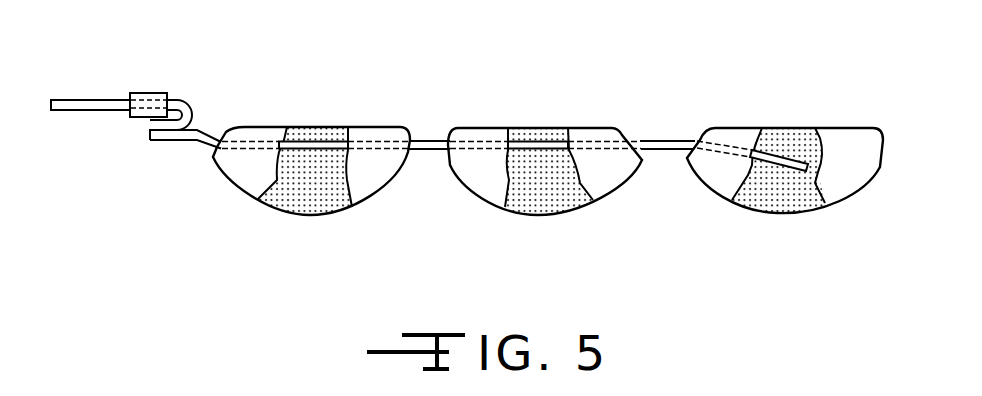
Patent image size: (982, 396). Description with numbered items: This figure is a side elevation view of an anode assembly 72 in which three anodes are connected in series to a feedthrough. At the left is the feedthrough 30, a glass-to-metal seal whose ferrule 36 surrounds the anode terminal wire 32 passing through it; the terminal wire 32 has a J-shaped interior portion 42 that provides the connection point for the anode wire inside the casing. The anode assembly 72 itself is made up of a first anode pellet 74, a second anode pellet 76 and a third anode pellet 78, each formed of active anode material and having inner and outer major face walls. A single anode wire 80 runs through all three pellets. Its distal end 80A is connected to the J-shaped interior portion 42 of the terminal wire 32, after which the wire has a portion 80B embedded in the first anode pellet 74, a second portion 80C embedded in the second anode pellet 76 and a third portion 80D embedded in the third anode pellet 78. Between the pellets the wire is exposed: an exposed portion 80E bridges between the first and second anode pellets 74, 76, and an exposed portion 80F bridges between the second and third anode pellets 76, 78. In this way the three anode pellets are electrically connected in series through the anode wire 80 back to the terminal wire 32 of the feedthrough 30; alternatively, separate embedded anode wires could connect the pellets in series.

The feedthrough 30 is at (145, 78).
The terminal wire 32 is at (78, 100).
The ferrule 36 is at (163, 95).
The J-shaped interior portion 42 is at (148, 125).
The anode assembly 72 is at (712, 88).
The first anode pellet 74 is at (293, 213).
The second anode pellet 76 is at (545, 215).
The third anode pellet 78 is at (773, 215).
The anode wire 80 is at (218, 136).
The distal end 80A is at (167, 143).
The portion embedded in first anode pellet 80B is at (323, 147).
The second portion embedded in second anode pellet 80C is at (548, 145).
The third portion embedded in third anode pellet 80D is at (803, 133).
The exposed portion 80E is at (425, 138).
The exposed portion 80F is at (665, 138).